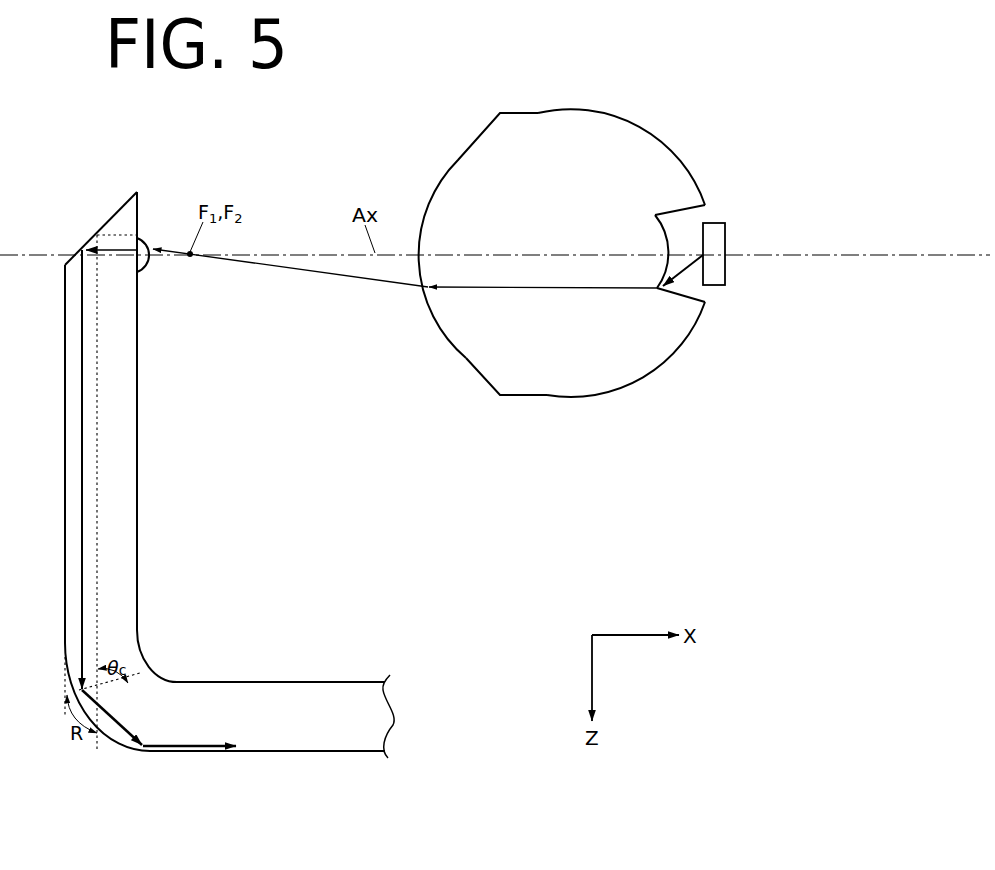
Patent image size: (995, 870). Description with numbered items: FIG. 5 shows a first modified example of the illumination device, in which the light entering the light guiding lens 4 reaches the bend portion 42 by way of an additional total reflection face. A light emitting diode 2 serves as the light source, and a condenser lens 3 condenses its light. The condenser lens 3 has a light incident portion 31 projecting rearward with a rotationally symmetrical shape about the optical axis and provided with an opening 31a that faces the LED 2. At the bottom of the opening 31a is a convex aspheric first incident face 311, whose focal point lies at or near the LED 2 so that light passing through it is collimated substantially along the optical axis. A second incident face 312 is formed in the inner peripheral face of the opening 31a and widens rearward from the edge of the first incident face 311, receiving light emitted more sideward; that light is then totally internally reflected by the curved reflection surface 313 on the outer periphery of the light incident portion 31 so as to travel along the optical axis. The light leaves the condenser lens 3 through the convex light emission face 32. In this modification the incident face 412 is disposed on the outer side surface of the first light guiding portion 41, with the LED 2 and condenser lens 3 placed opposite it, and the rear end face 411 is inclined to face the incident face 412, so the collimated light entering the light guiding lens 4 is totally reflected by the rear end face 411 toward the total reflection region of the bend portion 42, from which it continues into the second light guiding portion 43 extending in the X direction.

The light emitting diode (LED) 2 is at (725, 235).
The condenser lens 3 is at (592, 251).
The light incident portion 31 is at (652, 268).
The opening 31a is at (692, 285).
The light emission face 32 is at (460, 160).
The first incident face 311 is at (665, 230).
The second incident face 312 is at (703, 300).
The reflection surface 313 is at (662, 160).
The light guiding lens 4 is at (204, 491).
The first light guiding portion 41 is at (67, 448).
The bend portion 42 is at (162, 675).
The second light guiding portion 43 is at (315, 753).
The rear end face 411 is at (112, 217).
The incident face 412 is at (145, 265).